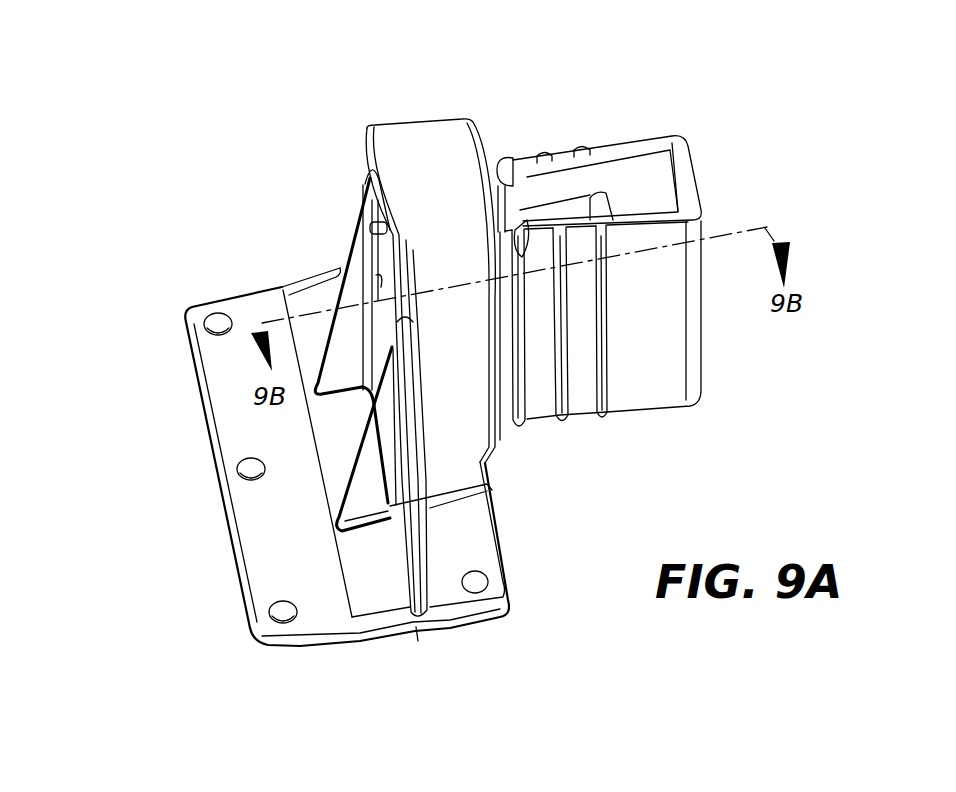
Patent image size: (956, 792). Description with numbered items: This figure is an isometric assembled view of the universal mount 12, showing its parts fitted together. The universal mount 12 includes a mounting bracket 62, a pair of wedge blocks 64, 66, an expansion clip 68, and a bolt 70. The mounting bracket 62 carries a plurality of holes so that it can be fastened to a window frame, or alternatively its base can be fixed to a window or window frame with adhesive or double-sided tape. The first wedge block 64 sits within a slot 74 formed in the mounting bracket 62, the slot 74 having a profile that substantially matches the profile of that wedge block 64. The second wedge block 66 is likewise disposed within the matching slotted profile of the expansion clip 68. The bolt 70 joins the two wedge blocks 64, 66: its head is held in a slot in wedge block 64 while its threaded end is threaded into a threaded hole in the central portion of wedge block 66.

The universal mount 12 is at (148, 232).
The mounting bracket 62 is at (422, 147).
The wedge block 64 is at (378, 255).
The wedge block 66 is at (597, 193).
The expansion clip 68 is at (620, 388).
The bolt 70 is at (530, 217).
The slot 74 is at (370, 213).